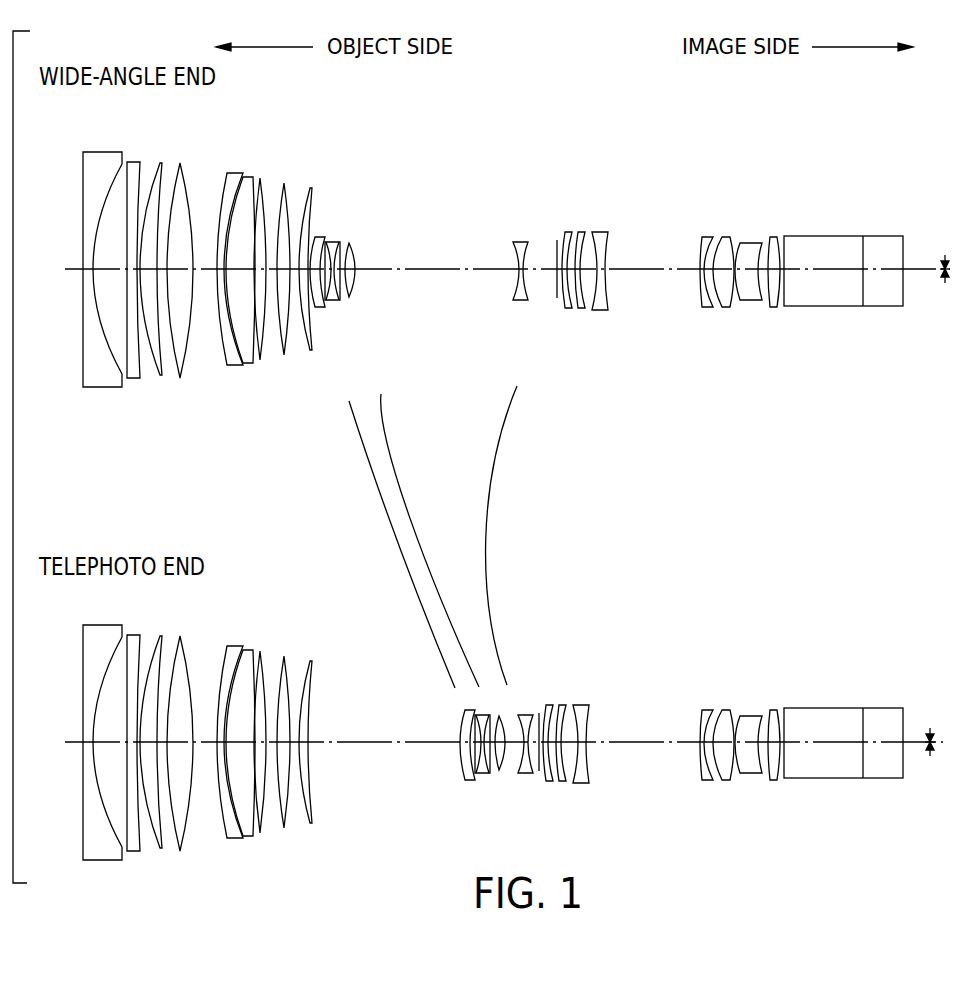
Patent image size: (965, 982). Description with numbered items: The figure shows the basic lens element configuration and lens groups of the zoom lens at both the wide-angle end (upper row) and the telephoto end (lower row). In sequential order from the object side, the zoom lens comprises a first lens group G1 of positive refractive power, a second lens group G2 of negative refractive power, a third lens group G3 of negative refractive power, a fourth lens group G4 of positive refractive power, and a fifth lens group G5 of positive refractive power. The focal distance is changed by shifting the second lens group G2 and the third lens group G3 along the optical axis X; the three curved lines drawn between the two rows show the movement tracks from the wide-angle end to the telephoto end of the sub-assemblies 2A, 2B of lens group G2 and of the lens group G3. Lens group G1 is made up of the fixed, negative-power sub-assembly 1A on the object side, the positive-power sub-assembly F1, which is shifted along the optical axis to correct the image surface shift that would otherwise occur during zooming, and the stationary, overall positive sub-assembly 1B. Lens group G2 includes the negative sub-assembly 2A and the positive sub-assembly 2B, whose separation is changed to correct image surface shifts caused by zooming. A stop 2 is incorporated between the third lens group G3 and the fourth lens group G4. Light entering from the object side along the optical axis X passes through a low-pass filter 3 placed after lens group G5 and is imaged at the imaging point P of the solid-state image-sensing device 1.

The first lens group G1 is at (83, 141).
The sub-assembly 1A is at (160, 385).
The sub-assembly F1 is at (168, 385).
The sub-assembly 1B is at (218, 367).
The second lens group G2 is at (317, 227).
The sub-assembly 2A is at (317, 307).
The sub-assembly 2B is at (348, 307).
The optical axis X is at (428, 265).
The third lens group G3 is at (507, 227).
The stop 2 is at (557, 298).
The fourth lens group G4 is at (558, 227).
The fifth lens group G5 is at (699, 228).
The low-pass filter 3 is at (834, 236).
The solid-state image-sensing device 1 is at (945, 258).
The imaging point P is at (945, 282).